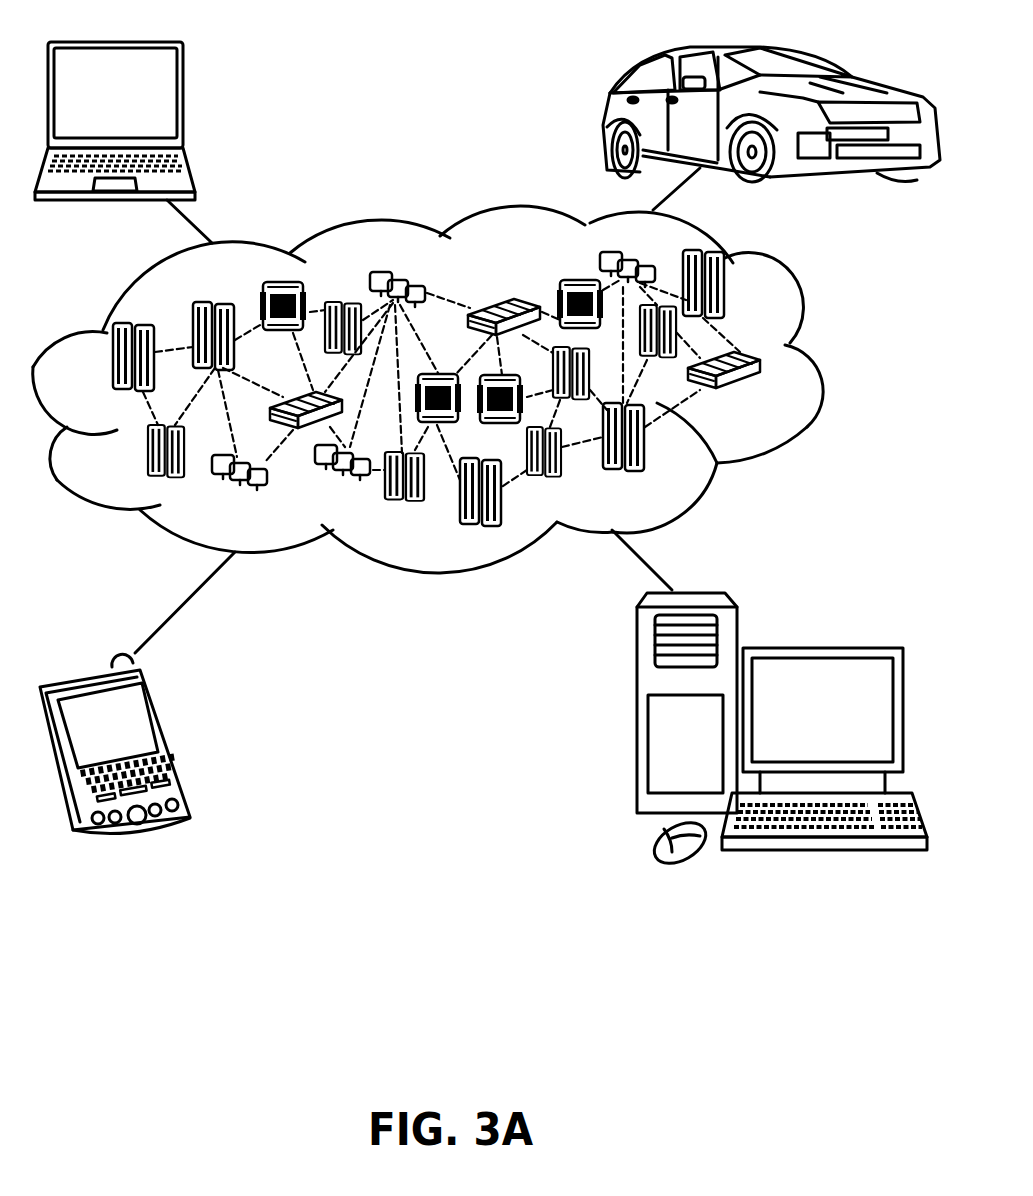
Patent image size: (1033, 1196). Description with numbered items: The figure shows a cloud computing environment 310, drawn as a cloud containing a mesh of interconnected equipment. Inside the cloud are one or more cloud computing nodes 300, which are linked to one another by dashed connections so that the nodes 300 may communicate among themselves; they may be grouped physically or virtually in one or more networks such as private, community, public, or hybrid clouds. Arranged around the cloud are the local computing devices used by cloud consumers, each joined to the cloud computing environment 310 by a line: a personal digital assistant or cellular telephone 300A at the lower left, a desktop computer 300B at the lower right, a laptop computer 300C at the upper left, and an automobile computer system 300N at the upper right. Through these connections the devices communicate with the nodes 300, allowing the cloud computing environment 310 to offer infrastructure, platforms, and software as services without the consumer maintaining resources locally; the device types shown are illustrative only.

The cloud computing nodes 300 is at (762, 396).
The cloud computing environment 310 is at (822, 366).
The personal digital assistant (PDA) or cellular telephone 300A is at (173, 737).
The desktop computer 300B is at (822, 648).
The laptop computer 300C is at (183, 104).
The automobile computer system 300N is at (608, 118).